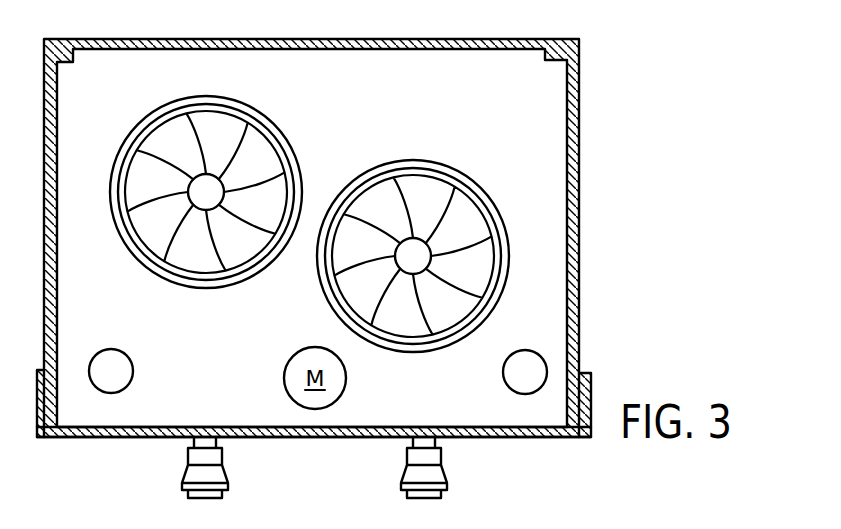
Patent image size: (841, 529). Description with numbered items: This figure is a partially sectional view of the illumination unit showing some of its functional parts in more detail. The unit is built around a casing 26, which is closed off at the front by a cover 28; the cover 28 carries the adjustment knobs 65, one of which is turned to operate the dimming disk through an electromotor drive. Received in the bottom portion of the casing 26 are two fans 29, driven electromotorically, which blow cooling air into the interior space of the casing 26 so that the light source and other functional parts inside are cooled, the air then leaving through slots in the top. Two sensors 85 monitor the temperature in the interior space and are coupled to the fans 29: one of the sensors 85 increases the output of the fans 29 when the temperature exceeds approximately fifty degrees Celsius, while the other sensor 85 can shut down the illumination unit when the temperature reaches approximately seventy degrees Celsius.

The casing 26 is at (570, 188).
The cover 28 is at (315, 438).
The fans 29 is at (195, 258).
The adjustment knobs 65 is at (190, 472).
The sensors 85 is at (107, 363).